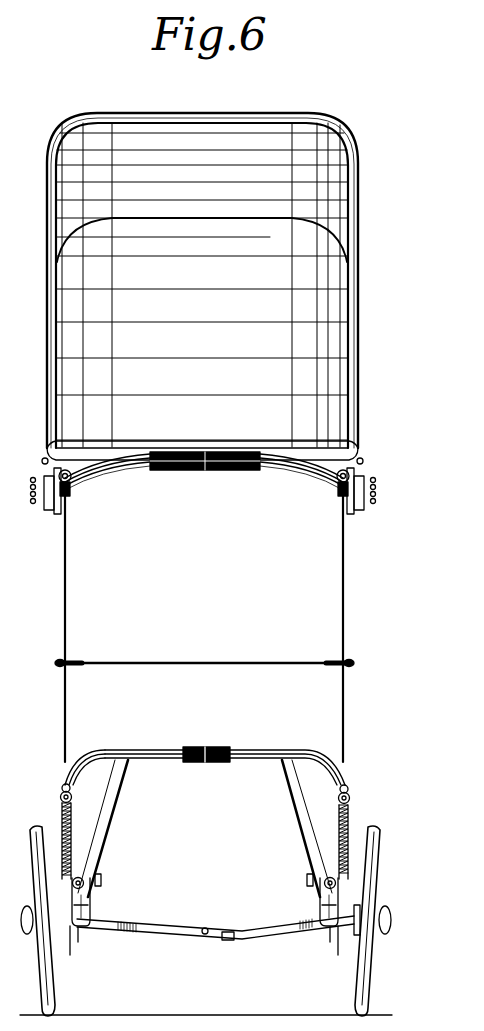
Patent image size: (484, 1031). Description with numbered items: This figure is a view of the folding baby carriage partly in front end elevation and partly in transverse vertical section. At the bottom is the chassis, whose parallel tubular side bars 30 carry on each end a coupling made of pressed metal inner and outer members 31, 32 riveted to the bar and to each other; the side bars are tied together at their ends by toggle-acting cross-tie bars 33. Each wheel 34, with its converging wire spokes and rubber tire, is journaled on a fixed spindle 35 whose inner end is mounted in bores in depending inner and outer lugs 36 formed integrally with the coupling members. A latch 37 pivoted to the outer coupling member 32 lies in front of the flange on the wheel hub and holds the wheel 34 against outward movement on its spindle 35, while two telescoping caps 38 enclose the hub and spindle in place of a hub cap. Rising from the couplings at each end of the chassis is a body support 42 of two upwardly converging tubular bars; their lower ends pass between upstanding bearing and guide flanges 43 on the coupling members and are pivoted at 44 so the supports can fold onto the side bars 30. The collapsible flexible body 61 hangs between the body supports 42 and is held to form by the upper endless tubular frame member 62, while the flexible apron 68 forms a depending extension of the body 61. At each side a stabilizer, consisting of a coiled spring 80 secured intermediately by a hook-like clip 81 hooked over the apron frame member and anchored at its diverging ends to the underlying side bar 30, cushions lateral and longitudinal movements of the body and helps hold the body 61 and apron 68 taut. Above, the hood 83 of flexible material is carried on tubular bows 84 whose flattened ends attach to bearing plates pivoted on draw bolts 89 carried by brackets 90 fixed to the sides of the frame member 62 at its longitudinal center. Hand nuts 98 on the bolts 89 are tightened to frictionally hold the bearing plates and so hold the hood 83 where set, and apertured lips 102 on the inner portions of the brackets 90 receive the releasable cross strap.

The side bar 30 is at (98, 893).
The inner coupling member 31 is at (100, 907).
The outer coupling member 32 is at (30, 898).
The cross-tie bar 33 is at (162, 930).
The wheel 34 is at (36, 828).
The spindle 35 is at (70, 945).
The lug 36 is at (85, 938).
The latch 37 is at (360, 920).
The cap 38 is at (30, 950).
The body support 42 is at (115, 785).
The bearing and guide flange 43 is at (84, 876).
The pivot 44 is at (102, 880).
The body 61 is at (68, 577).
The upper frame member 62 is at (135, 460).
The apron 68 is at (68, 720).
The coiled spring 80 is at (74, 830).
The clip 81 is at (62, 786).
The hood 83 is at (165, 128).
The bow 84 is at (232, 117).
The draw bolt 89 is at (57, 511).
The bracket 90 is at (50, 521).
The hand nut 98 is at (34, 477).
The apertured lip 102 is at (74, 484).